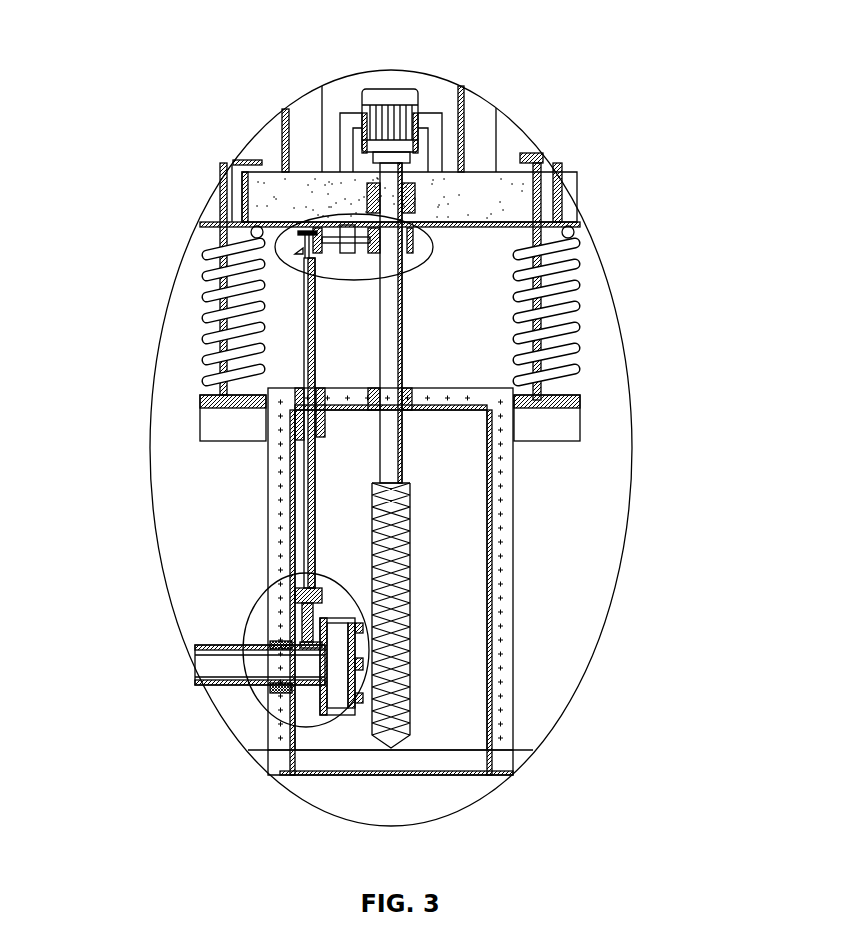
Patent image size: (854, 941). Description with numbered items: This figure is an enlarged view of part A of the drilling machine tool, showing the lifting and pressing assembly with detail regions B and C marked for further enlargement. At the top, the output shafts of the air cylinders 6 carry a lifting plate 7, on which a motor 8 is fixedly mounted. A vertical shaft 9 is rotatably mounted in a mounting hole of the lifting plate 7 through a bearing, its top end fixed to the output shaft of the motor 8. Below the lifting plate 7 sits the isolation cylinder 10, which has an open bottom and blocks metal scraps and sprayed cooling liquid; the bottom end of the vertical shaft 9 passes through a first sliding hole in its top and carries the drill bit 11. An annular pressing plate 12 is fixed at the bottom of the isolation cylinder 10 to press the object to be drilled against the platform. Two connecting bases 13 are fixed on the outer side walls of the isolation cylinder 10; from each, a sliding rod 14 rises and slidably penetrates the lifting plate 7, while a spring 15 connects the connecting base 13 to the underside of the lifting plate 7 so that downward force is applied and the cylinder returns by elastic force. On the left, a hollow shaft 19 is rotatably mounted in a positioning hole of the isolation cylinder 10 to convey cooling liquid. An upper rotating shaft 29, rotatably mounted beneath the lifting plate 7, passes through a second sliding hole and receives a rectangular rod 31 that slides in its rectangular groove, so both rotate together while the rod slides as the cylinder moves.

The air cylinder 6 is at (308, 123).
The lifting plate 7 is at (280, 195).
The motor 8 is at (383, 88).
The vertical shaft 9 is at (400, 367).
The isolation cylinder 10 is at (513, 505).
The drill bit 11 is at (405, 610).
The annular pressing plate 12 is at (282, 763).
The connecting base 13 is at (580, 412).
The sliding rod 14 is at (543, 205).
The spring 15 is at (577, 278).
The hollow shaft 19 is at (227, 683).
The upper rotating shaft 29 is at (303, 310).
The rectangular rod 31 is at (307, 537).
The part A is at (478, 97).
The detail view B is at (247, 620).
The detail view C is at (285, 262).